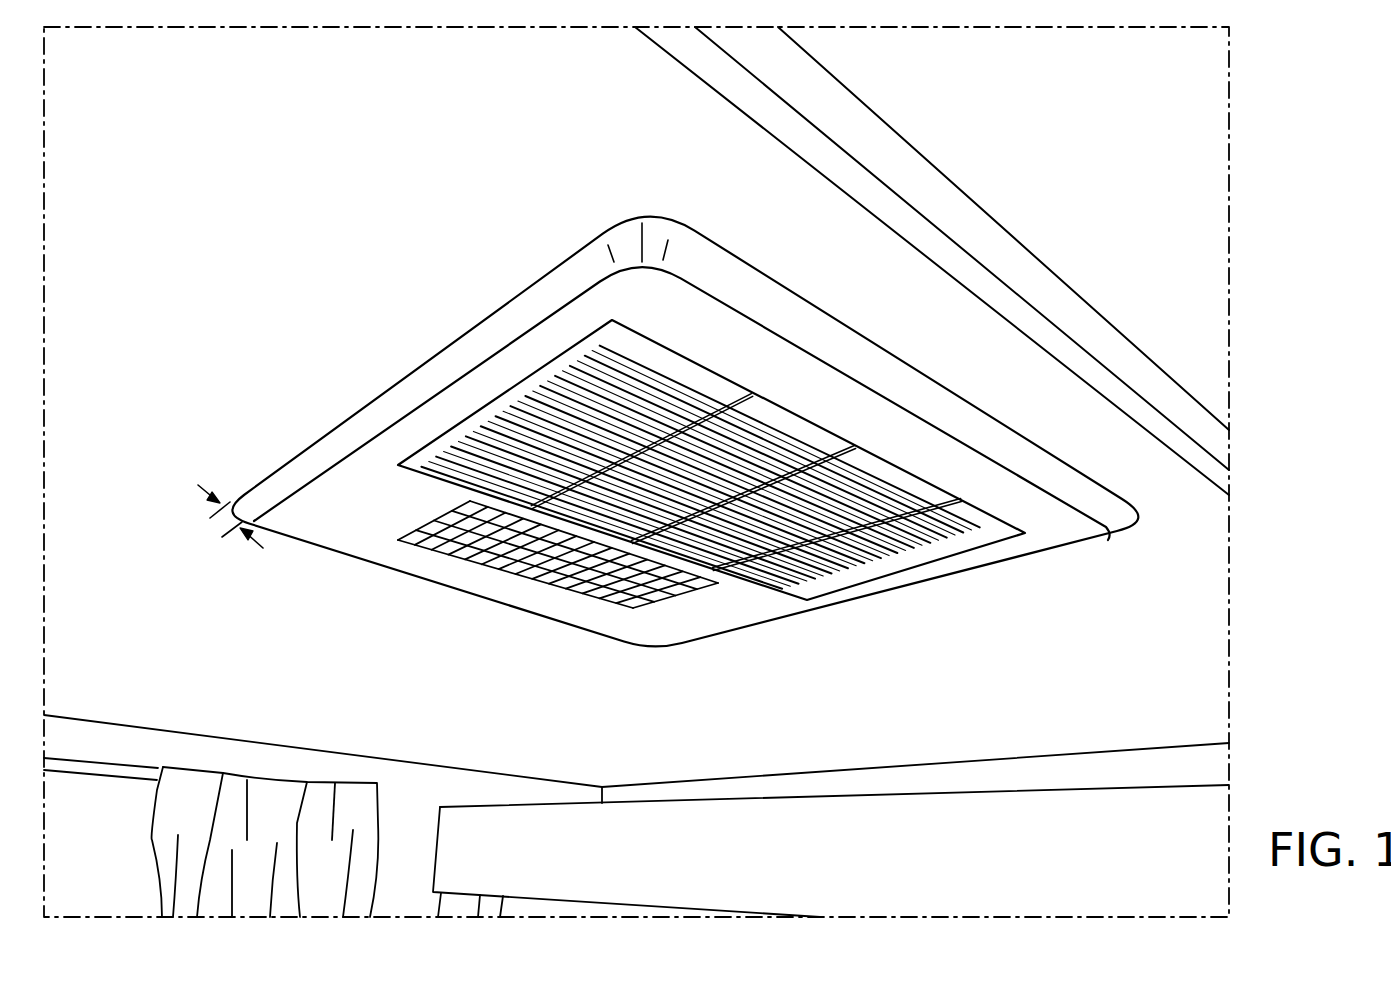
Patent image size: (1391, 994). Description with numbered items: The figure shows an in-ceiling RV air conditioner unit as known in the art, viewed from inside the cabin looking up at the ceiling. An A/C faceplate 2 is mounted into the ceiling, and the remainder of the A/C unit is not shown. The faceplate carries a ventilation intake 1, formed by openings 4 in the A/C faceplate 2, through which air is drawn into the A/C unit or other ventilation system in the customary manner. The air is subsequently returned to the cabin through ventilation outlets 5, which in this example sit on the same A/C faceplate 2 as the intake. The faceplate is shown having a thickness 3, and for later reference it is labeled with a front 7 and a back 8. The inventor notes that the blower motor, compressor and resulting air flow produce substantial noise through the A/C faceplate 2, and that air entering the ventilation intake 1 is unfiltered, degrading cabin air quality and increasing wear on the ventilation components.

The ventilation intake 1 is at (345, 360).
The A/C faceplate 2 is at (750, 340).
The thickness 3 is at (222, 523).
The openings 4 is at (887, 570).
The ventilation outlets 5 is at (657, 595).
The front 7 is at (932, 373).
The back 8 is at (168, 92).